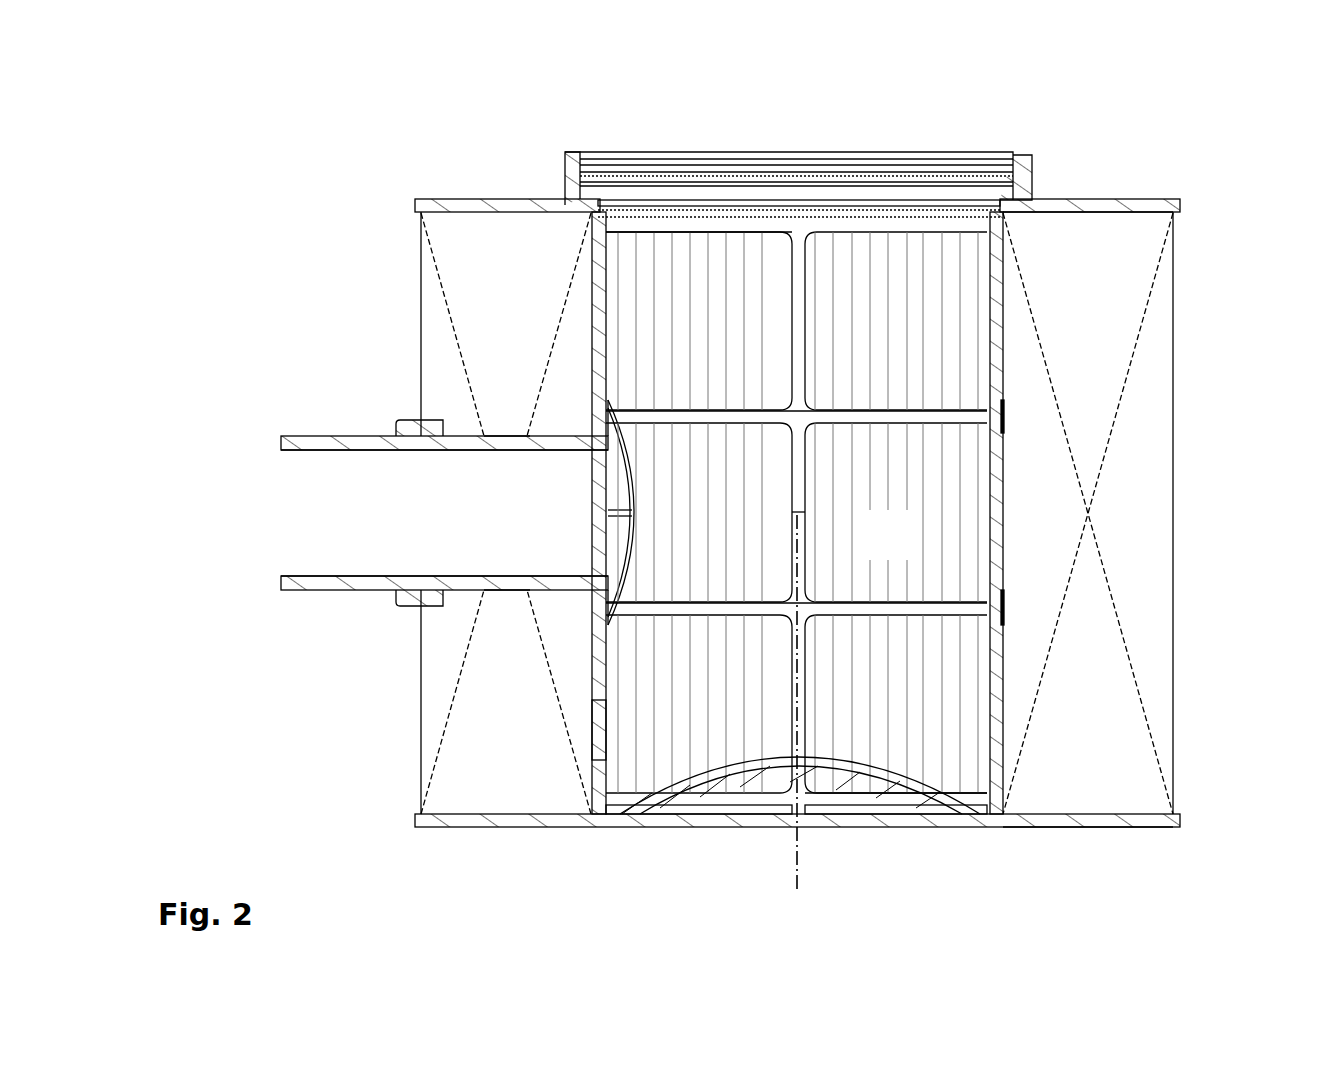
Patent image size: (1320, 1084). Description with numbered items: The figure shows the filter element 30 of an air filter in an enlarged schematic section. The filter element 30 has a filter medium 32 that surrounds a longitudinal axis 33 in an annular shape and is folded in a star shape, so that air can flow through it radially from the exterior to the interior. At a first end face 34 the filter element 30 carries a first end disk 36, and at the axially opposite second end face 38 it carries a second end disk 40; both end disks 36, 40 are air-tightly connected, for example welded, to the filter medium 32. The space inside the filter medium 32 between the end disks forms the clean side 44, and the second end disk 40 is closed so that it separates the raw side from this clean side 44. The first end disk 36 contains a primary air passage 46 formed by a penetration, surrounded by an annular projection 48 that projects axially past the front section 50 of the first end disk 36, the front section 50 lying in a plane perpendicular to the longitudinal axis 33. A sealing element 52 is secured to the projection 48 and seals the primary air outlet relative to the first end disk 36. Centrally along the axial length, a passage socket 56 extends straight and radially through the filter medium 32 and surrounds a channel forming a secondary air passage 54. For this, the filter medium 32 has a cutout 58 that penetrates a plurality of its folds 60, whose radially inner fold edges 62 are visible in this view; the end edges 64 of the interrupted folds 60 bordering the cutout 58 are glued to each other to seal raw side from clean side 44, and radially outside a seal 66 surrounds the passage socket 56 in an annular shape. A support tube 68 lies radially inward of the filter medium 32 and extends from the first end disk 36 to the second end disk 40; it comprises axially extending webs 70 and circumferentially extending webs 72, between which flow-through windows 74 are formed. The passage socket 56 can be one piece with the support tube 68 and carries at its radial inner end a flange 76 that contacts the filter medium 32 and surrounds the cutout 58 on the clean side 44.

The filter element 30 is at (290, 208).
The filter medium 32 is at (1158, 404).
The longitudinal axis 33 is at (797, 850).
The first end face 34 is at (1092, 165).
The first end disk 36 is at (1158, 205).
The second end face 38 is at (1040, 865).
The second end disk 40 is at (1130, 824).
The clean side 44 is at (796, 523).
The primary air passage 46 is at (855, 205).
The annular projection 48 is at (565, 178).
The front section 50 is at (450, 200).
The sealing element 52 is at (626, 165).
The secondary air passage 54 is at (378, 508).
The passage socket 56 is at (312, 592).
The cutout 58 is at (498, 405).
The folds 60 is at (895, 760).
The fold edges 62 is at (923, 724).
The end edges 64 is at (515, 437).
The seal 66 is at (415, 430).
The support tube 68 is at (600, 748).
The axially extending webs 70 is at (600, 697).
The circumferential webs 72 is at (945, 419).
The windows 74 is at (700, 285).
The flange 76 is at (636, 481).